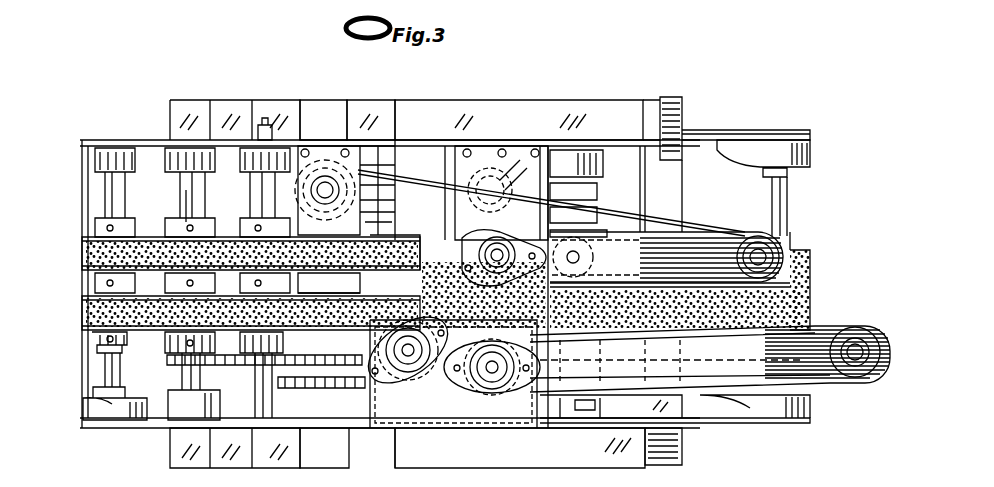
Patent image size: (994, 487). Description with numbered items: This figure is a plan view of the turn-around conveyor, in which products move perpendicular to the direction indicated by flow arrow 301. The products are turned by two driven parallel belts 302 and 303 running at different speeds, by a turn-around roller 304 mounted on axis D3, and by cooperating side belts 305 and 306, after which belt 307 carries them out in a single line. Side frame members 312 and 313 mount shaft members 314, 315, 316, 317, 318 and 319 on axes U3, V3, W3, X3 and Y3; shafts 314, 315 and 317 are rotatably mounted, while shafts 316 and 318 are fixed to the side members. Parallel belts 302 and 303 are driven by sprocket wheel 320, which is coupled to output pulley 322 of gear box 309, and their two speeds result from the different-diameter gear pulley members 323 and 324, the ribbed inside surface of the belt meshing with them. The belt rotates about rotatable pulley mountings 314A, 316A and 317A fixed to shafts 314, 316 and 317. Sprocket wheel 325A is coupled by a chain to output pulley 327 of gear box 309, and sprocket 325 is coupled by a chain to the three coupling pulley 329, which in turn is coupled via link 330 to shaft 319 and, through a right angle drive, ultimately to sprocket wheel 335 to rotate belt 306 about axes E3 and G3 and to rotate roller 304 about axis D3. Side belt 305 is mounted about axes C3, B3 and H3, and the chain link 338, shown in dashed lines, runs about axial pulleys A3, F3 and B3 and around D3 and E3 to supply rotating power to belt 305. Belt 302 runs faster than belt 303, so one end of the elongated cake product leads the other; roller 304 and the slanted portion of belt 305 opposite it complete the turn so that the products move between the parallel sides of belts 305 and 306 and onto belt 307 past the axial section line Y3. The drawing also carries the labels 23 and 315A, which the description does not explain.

The axis U3 is at (112, 140).
The axis V3 is at (190, 132).
The axis W3 is at (262, 126).
The axis X3 is at (385, 132).
The axis Y3 is at (445, 132).
The section line 23 is at (780, 132).
The side frame member 313 is at (92, 140).
The shaft member 315 is at (152, 162).
The axis C3 is at (325, 180).
The shaft member 318 is at (448, 158).
The axial pulley F3 is at (490, 176).
The shaft member 314 is at (108, 193).
The gear pulley member 323 is at (186, 220).
The shaft member 316 is at (256, 215).
The three coupling pulley 329 is at (595, 215).
The side belt 305 is at (717, 222).
The shaft member 319 is at (790, 188).
The axis H3 is at (772, 240).
The parallel belt 302 is at (84, 250).
The shaft member 317 is at (352, 226).
The sprocket 325 is at (412, 240).
The belt 307 is at (805, 262).
The rotatable pulley mounting 314A is at (92, 286).
The foot 315A is at (172, 286).
The rotatable pulley mounting 316A is at (248, 286).
The axial pulley A3 is at (580, 257).
The flow arrow 301 is at (50, 285).
The rotatable pulley mounting 317A is at (320, 280).
The axis D3 is at (404, 342).
The axis B3 is at (492, 274).
The chain link 338 is at (560, 282).
The axis G3 is at (880, 288).
The parallel belt 303 is at (84, 326).
The gear pulley member 324 is at (182, 342).
The link 330 is at (700, 362).
The gear reduction 309 is at (328, 366).
The side frame member 312 is at (92, 432).
The sprocket wheel 320 is at (170, 360).
The output pulley 322 is at (328, 395).
The output pulley 327 is at (360, 400).
The turn-around roller 304 is at (445, 446).
The sprocket wheel 335 is at (520, 448).
The side belt 306 is at (840, 378).
The sprocket wheel 325A is at (297, 456).
The axis E3 is at (486, 383).